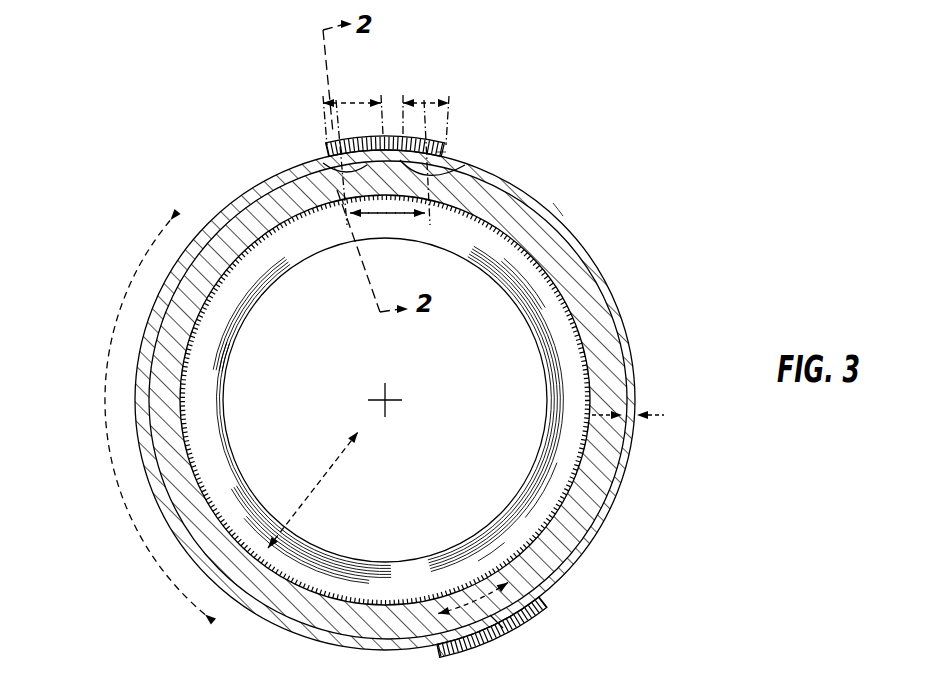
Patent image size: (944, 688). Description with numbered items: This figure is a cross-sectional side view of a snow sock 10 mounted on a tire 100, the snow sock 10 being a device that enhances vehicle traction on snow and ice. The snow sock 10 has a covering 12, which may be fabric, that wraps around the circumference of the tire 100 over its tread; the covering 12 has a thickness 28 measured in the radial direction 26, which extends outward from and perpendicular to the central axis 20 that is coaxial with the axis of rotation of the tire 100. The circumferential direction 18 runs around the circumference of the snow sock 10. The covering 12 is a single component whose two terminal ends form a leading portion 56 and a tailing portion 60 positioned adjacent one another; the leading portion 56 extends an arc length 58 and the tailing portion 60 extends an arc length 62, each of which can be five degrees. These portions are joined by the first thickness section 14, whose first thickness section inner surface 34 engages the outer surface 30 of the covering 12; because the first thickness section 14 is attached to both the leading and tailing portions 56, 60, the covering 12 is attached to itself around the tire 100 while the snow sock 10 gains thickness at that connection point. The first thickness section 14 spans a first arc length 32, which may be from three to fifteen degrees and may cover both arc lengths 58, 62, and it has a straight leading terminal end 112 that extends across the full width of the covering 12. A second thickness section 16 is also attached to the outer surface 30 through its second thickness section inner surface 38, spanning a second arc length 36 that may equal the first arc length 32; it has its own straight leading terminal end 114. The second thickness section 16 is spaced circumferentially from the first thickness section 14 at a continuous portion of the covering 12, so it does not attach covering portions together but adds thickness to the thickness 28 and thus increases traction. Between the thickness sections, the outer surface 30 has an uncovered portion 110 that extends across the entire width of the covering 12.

The snow sock 10 is at (603, 278).
The covering 12 is at (577, 240).
The first thickness section 14 is at (440, 142).
The second thickness section 16 is at (498, 630).
The circumferential direction 18 is at (111, 335).
The central axis 20 is at (396, 396).
The radial direction 26 is at (306, 462).
The thickness 28 is at (656, 414).
The outer surface 30 is at (638, 355).
The first arc length 32 is at (400, 214).
The first thickness section inner surface 34 is at (332, 162).
The second arc length 36 is at (458, 604).
The second thickness section inner surface 38 is at (500, 625).
The leading portion 56 is at (342, 168).
The arc length 58 is at (353, 100).
The tailing portion 60 is at (420, 184).
The arc length 62 is at (437, 100).
The tire 100 is at (540, 452).
The uncovered portion 110 is at (558, 202).
The leading terminal end 112 is at (445, 152).
The leading terminal end 114 is at (442, 652).